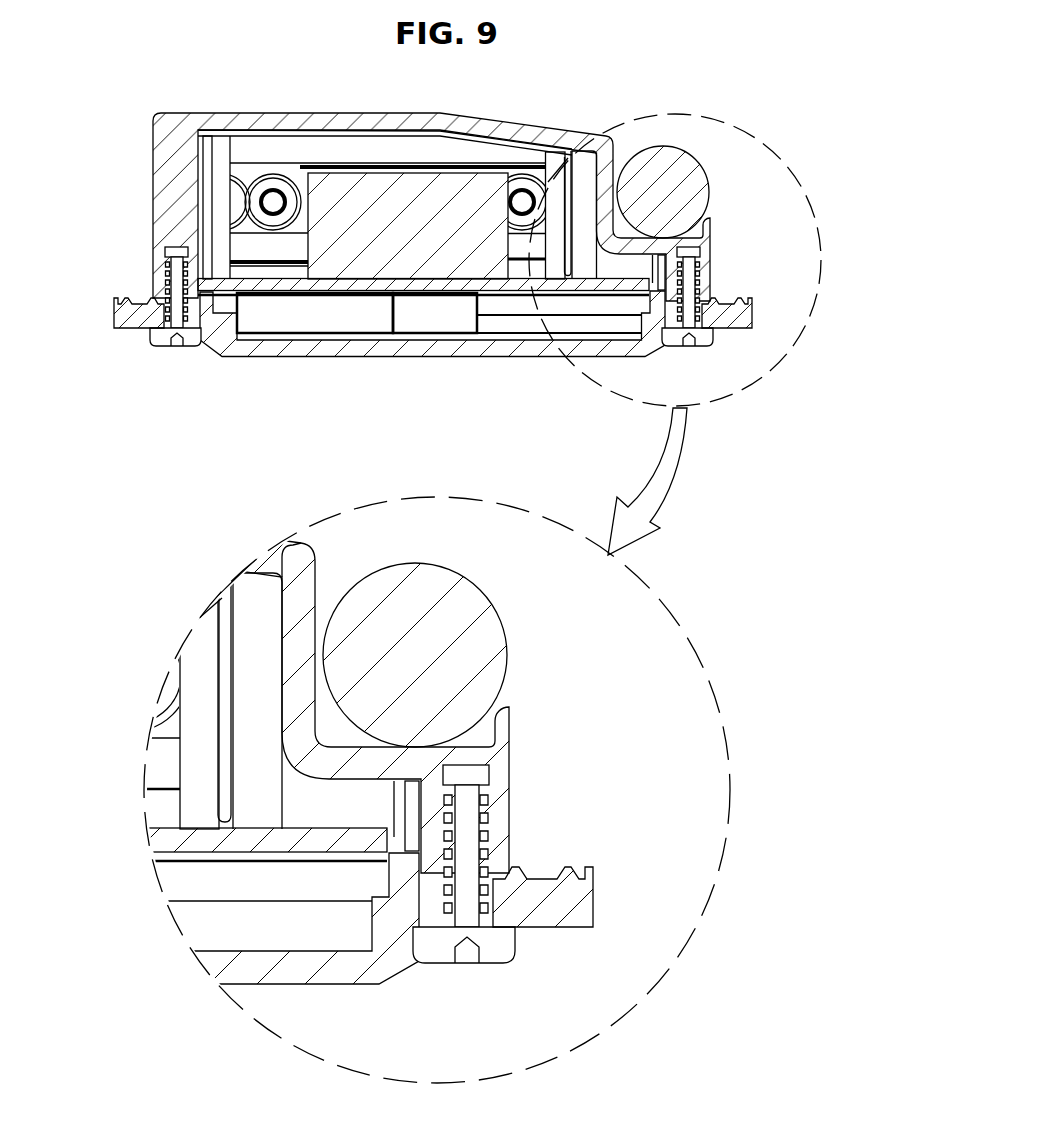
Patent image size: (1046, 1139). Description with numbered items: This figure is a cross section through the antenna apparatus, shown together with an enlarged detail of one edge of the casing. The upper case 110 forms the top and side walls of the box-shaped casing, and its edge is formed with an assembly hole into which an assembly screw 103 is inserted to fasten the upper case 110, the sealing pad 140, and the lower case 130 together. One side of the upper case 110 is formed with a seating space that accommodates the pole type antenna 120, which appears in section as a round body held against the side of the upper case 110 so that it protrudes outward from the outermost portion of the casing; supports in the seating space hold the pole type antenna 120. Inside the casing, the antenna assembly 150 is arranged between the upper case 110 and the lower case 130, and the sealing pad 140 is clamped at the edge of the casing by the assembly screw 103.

The upper case 110 is at (153, 152).
The pole type antenna 120 is at (507, 625).
The lower case 130 is at (337, 357).
The sealing pad 140 is at (737, 300).
The antenna assembly 150 is at (498, 290).
The assembly screw 103 is at (172, 347).